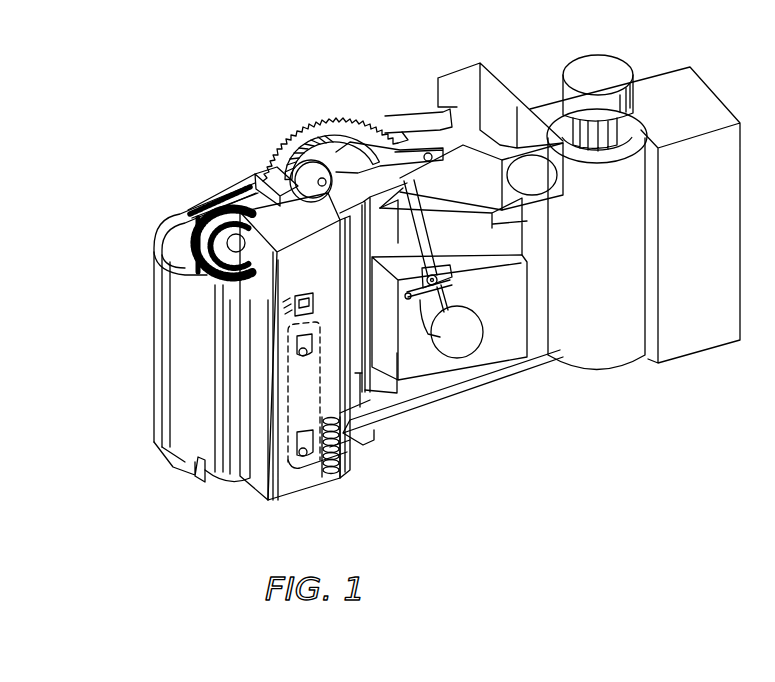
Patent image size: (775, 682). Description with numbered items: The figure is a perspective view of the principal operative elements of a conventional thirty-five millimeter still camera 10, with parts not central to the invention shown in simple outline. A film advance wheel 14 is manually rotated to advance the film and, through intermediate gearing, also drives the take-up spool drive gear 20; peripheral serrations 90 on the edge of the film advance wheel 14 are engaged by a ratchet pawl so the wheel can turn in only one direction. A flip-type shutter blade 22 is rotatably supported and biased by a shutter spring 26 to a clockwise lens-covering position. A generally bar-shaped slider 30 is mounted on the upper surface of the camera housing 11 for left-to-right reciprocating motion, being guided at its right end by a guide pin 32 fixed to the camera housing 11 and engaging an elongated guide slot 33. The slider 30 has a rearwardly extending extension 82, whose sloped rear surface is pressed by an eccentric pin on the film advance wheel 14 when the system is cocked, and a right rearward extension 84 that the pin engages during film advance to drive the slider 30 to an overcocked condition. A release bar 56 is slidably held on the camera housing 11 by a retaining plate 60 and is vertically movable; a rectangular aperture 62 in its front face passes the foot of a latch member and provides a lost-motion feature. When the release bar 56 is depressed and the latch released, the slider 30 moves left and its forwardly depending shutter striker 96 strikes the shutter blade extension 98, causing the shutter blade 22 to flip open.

The still camera 10 is at (447, 405).
The camera housing 11 is at (500, 380).
The film advance wheel 14 is at (325, 128).
The take-up spool drive gear 20 is at (215, 290).
The shutter blade 22 is at (478, 316).
The shutter spring 26 is at (441, 313).
The slider 30 is at (386, 188).
The guide pin 32 is at (455, 145).
The guide slot 33 is at (397, 205).
The release bar 56 is at (329, 262).
The retaining plate 60 is at (287, 425).
The rectangular aperture 62 is at (331, 282).
The slider extension 82 is at (265, 180).
The right rearward extension 84 is at (285, 142).
The peripheral serrations 90 is at (348, 122).
The shutter striker 96 is at (497, 218).
The shutter blade extension 98 is at (437, 270).